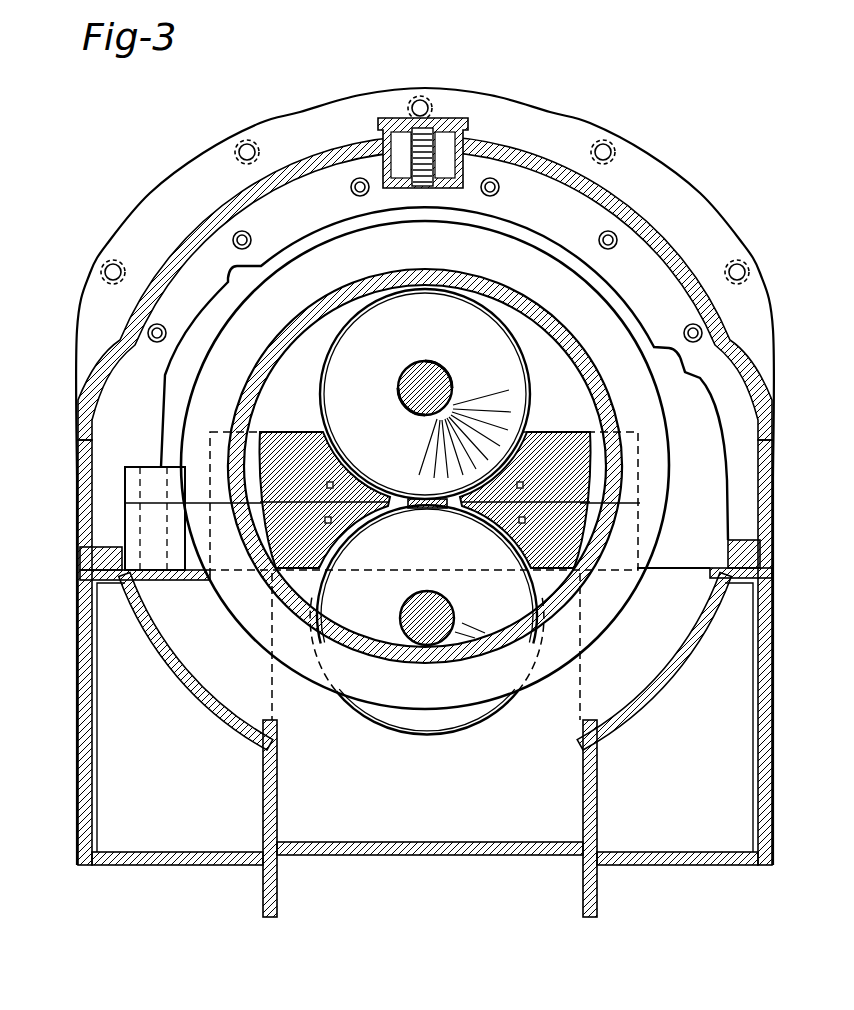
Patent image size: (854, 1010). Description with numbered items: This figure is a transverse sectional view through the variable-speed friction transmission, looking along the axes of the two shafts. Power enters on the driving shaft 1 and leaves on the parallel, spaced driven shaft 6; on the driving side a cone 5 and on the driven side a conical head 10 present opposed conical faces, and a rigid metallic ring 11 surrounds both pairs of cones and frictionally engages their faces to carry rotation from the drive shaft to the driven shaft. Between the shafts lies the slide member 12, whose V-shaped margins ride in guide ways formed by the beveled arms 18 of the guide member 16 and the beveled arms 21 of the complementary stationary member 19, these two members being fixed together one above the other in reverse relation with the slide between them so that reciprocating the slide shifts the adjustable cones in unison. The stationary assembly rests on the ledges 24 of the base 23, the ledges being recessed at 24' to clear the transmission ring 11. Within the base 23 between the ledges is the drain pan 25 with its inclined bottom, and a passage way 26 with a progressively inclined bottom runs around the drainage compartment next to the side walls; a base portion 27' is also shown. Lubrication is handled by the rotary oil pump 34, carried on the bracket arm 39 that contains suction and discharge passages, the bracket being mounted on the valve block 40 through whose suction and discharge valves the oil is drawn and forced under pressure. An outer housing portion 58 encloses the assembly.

The driving shaft 1 is at (448, 383).
The cone 5 is at (425, 394).
The driven shaft 6 is at (438, 605).
The conical head 10 is at (427, 574).
The ring 11 is at (652, 404).
The slide member 12 is at (480, 516).
The guide member 16 is at (636, 466).
The beveled arms 18 is at (546, 440).
The stationary member 19 is at (630, 542).
The beveled arms 21 is at (578, 566).
The base 23 is at (80, 748).
The ledges 24 is at (426, 576).
The recess 24' is at (425, 661).
The drain pan 25 is at (430, 818).
The passage way 26 is at (425, 724).
The base plate 27' is at (430, 869).
The rotary oil pump 34 is at (258, 273).
The bracket arm 39 is at (193, 333).
The valve block 40 is at (140, 537).
The housing wall 58 is at (600, 193).